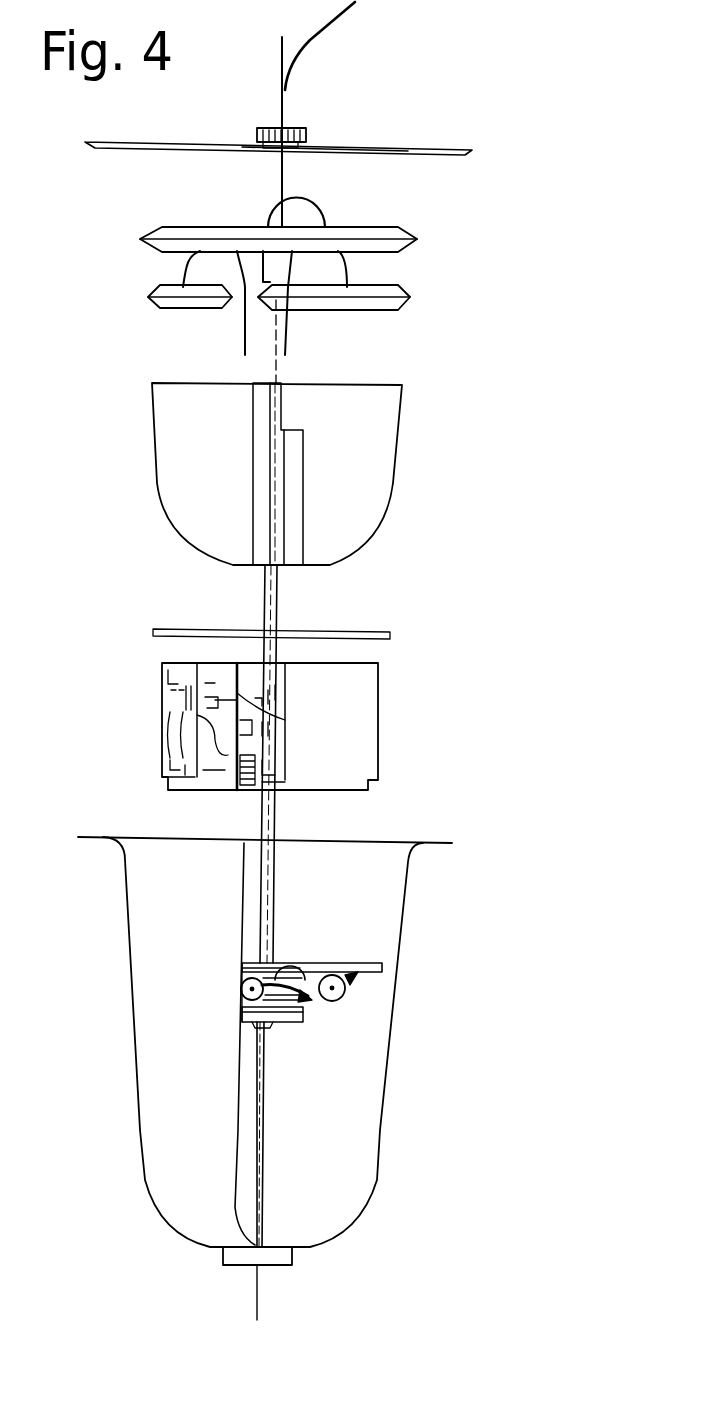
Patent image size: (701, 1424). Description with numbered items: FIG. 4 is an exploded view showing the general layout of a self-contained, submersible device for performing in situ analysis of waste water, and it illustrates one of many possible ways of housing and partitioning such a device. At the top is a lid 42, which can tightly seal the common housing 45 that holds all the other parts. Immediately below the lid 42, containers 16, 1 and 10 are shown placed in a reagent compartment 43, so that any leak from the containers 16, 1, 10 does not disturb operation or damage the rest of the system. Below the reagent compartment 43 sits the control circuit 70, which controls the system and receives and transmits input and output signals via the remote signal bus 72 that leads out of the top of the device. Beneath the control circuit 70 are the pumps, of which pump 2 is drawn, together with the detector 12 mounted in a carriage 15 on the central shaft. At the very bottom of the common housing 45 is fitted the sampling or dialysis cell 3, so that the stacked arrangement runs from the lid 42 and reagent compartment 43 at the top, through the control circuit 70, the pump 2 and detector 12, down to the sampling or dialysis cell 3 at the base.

The remote signal bus 72 is at (340, 22).
The lid 42 is at (477, 152).
The container 16 is at (417, 239).
The container 10 is at (148, 300).
The container 1 is at (410, 312).
The reagent compartment 43 is at (368, 446).
The control circuit 70 is at (378, 724).
The common housing 45 is at (370, 888).
The detector 12 is at (285, 965).
The pump 2 is at (338, 1002).
The carriage 15 is at (292, 1022).
The sampling or dialysis cell 3 is at (283, 1257).